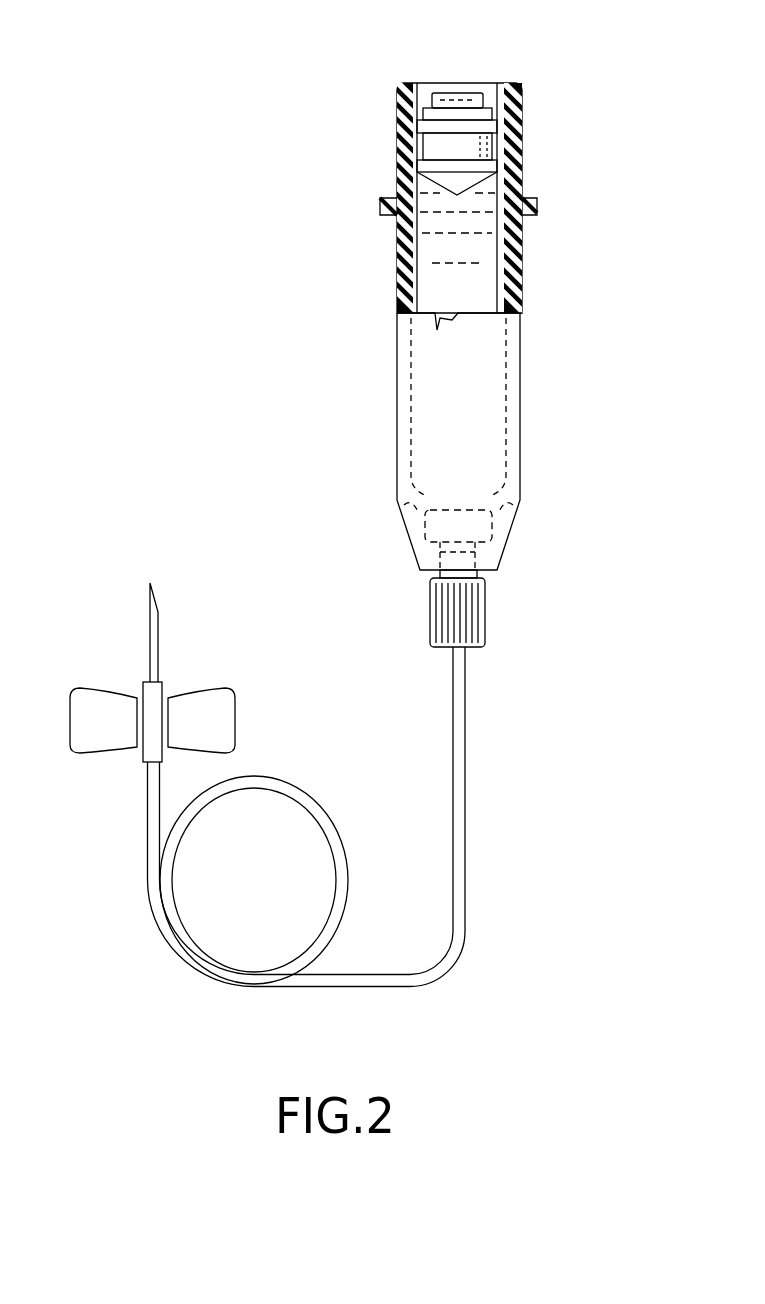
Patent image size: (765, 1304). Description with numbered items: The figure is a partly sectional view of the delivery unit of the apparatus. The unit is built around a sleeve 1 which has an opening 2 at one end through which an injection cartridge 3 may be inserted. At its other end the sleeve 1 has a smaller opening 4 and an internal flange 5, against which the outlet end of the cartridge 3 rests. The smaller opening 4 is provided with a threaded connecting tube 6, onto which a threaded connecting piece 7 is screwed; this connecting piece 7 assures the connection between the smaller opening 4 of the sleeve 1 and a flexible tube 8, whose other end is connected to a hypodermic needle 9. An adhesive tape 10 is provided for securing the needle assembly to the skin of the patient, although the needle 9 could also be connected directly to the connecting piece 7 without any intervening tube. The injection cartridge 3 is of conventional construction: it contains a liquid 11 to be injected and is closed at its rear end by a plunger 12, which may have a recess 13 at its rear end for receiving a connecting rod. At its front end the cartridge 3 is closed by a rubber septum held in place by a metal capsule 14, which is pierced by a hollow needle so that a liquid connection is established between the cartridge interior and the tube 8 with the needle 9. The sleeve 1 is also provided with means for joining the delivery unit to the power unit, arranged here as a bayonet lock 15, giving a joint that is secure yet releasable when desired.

The sleeve 1 is at (378, 300).
The opening 2 is at (428, 84).
The injection cartridge 3 is at (492, 96).
The smaller opening 4 is at (420, 567).
The internal flange 5 is at (432, 540).
The threaded connecting tube 6 is at (476, 573).
The threaded connecting piece 7 is at (484, 638).
The flexible tube 8 is at (455, 958).
The hypodermic needle 9 is at (157, 640).
The adhesive tape 10 is at (233, 738).
The liquid 11 is at (468, 303).
The plunger 12 is at (430, 148).
The recess 13 is at (449, 86).
The metal capsule 14 is at (505, 522).
The bayonet lock 15 is at (539, 206).